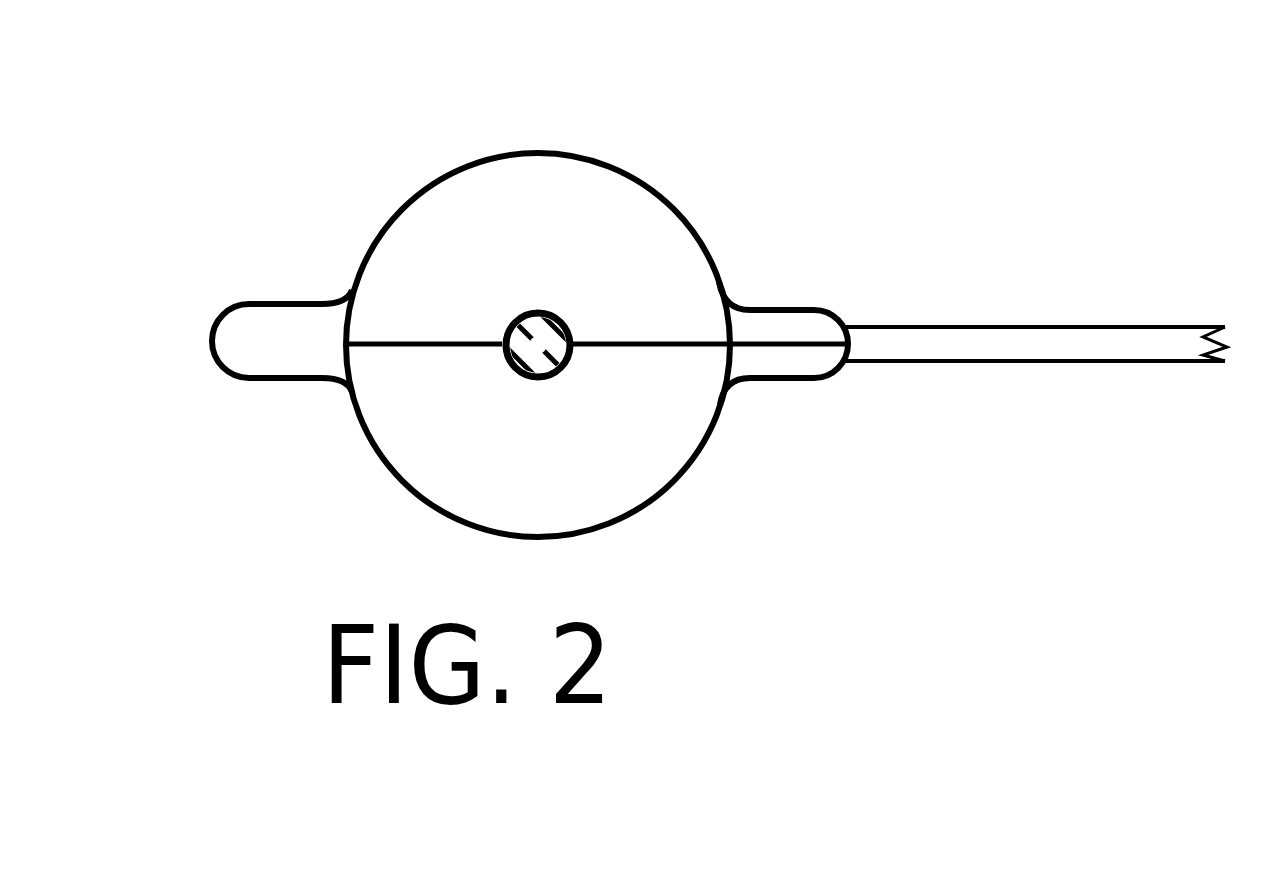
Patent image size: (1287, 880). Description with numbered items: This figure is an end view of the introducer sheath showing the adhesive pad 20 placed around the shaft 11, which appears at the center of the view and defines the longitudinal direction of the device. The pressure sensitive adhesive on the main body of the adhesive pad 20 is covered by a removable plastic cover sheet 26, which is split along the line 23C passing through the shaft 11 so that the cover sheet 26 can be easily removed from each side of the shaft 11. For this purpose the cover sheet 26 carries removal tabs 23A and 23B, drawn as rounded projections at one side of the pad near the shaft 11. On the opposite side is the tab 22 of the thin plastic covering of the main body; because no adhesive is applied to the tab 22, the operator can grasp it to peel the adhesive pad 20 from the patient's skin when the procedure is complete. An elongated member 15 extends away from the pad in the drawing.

The adhesive pad 20 is at (468, 138).
The removable plastic cover sheet 26 is at (573, 252).
The tab 22 is at (297, 383).
The line 23C is at (423, 353).
The shaft 11 is at (512, 323).
The removal tab 23B is at (763, 318).
The removal tab 23A is at (760, 383).
The shaft 15 is at (1070, 323).